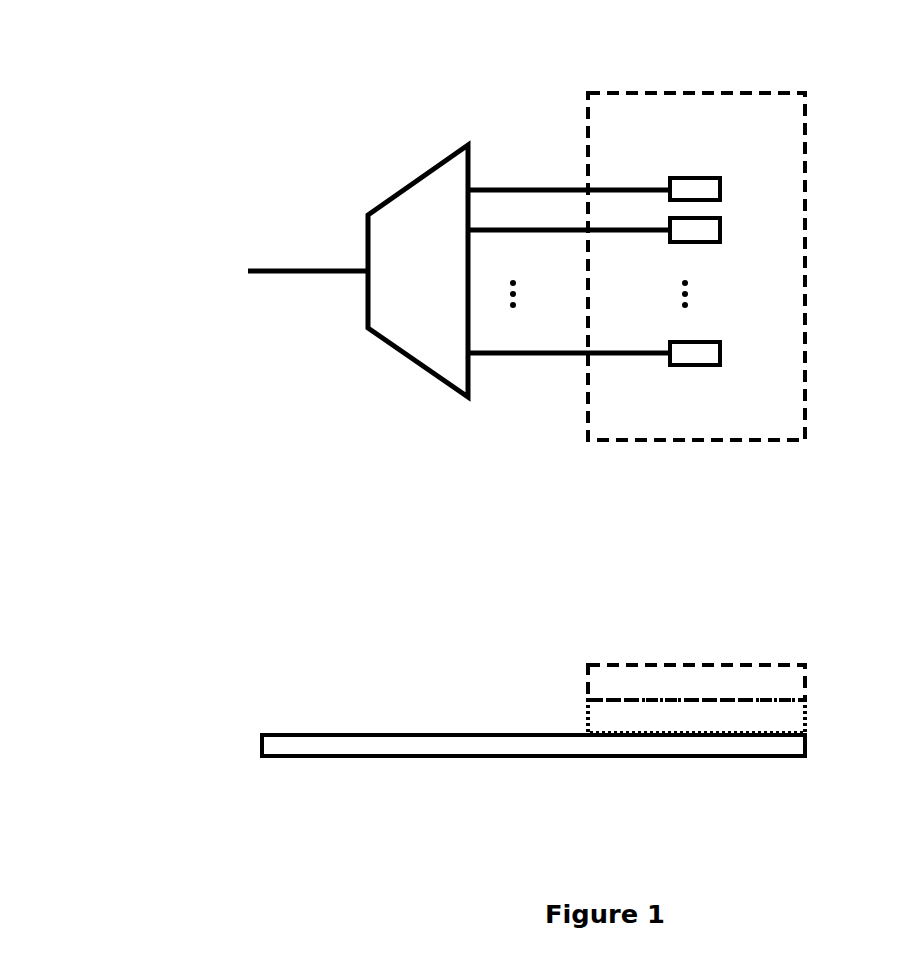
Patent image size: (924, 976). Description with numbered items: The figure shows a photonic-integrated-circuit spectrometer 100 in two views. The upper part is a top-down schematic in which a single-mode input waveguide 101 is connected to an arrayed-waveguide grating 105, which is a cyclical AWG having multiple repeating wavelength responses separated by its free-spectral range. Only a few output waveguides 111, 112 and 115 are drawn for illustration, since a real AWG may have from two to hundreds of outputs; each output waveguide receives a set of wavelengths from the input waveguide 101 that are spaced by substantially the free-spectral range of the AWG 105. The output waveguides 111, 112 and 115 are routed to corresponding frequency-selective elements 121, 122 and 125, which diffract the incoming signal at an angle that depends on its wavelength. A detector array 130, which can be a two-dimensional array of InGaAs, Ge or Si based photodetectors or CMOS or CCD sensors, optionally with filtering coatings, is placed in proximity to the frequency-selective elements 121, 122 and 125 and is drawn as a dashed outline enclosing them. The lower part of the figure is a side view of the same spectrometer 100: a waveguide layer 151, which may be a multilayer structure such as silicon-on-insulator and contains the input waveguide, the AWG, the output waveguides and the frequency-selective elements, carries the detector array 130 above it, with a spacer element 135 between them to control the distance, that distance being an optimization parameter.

The PIC spectrometer 100 is at (176, 117).
The single-mode input waveguide 101 is at (248, 259).
The arrayed-waveguide grating 105 is at (402, 177).
The output waveguide 111 is at (502, 187).
The output waveguide 112 is at (527, 229).
The output waveguide 115 is at (518, 355).
The frequency-selective element 121 is at (722, 188).
The frequency-selective element 122 is at (722, 228).
The frequency-selective element 125 is at (720, 352).
The detector array 130 is at (698, 92).
The spacer element 135 is at (585, 718).
The waveguide layer 151 is at (350, 733).